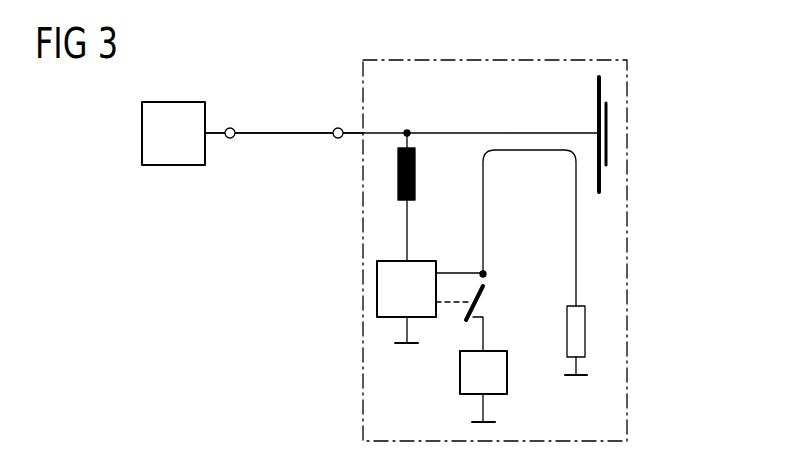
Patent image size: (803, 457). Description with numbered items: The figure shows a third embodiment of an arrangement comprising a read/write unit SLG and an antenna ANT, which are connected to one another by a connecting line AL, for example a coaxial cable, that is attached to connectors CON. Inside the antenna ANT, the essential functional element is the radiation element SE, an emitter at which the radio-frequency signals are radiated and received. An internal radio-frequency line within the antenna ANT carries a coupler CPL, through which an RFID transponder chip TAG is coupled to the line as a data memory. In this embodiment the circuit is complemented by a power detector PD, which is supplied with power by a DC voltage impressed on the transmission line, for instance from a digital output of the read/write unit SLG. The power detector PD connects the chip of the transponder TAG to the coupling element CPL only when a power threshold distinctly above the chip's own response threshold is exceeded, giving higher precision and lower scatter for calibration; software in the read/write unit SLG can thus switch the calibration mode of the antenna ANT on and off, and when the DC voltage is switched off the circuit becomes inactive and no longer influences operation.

The read/write unit SLG is at (142, 133).
The connecting line AL is at (283, 133).
The connector CON is at (230, 138).
The antenna ANT is at (627, 388).
The radiation element SE is at (608, 145).
The coupler CPL is at (521, 152).
The power detector PD is at (377, 288).
The RFID transponder chip TAG is at (460, 375).